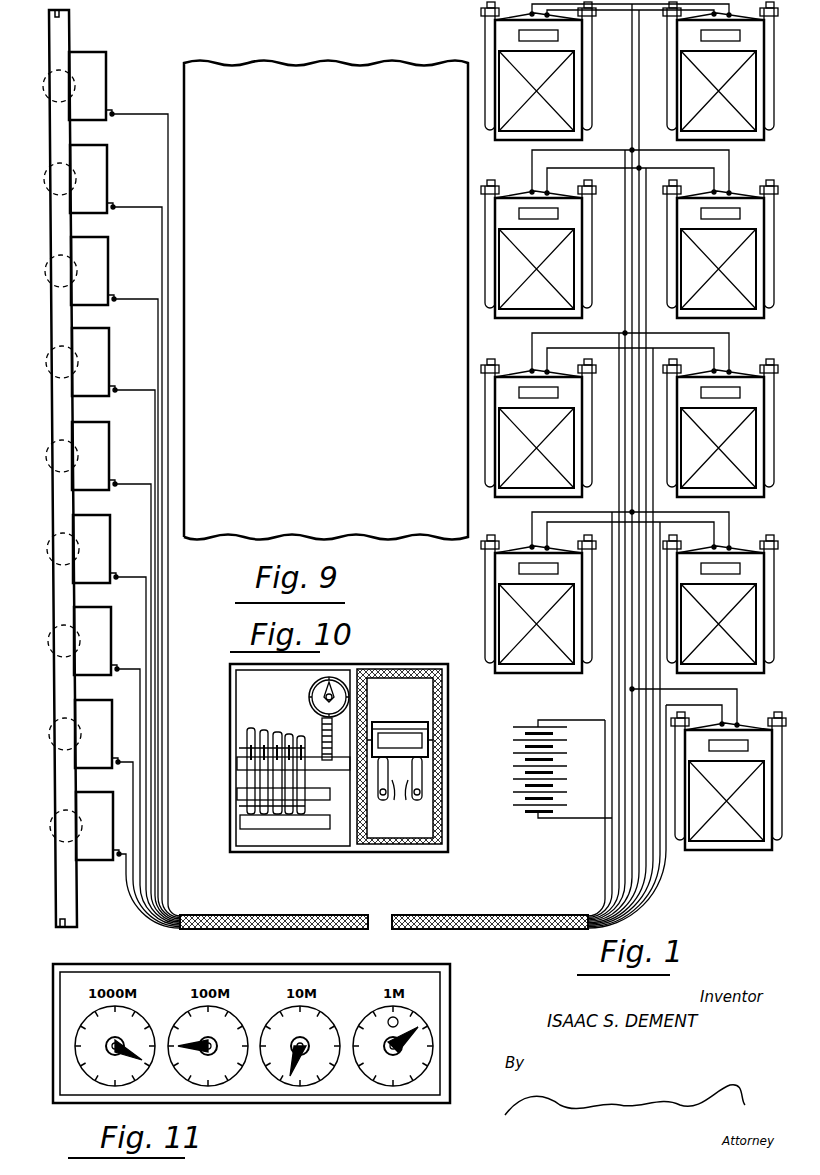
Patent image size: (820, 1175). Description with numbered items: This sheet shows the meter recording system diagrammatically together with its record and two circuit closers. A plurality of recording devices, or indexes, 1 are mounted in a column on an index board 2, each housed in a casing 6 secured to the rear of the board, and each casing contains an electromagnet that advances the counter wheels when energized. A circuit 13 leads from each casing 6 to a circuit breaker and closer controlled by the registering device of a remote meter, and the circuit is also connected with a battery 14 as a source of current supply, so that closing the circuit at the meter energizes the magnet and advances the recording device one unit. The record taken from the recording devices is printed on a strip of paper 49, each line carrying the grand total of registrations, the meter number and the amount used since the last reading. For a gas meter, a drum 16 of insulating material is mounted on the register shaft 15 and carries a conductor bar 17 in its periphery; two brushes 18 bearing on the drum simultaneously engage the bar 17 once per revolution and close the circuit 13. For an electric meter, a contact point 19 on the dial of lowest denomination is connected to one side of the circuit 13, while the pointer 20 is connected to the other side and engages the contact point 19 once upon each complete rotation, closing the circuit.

In FIG. 1, the recording device 1 is at (62, 365).
In FIG. 1, the index board 2 is at (58, 318).
In FIG. 1, the casing 6 is at (110, 100).
In FIG. 1, the circuit 13 is at (143, 202).
In FIG. 1, the battery 14 is at (532, 812).
In FIG. 10, the register shaft 15 is at (312, 730).
In FIG. 10, the drum 16 is at (400, 722).
In FIG. 10, the conductor bar 17 is at (418, 740).
In FIG. 10, the brushes 18 is at (400, 788).
In FIG. 11, the contact point 19 is at (398, 1020).
In FIG. 11, the pointer 20 is at (420, 1030).
In FIG. 9, the strip of paper 49 is at (326, 278).